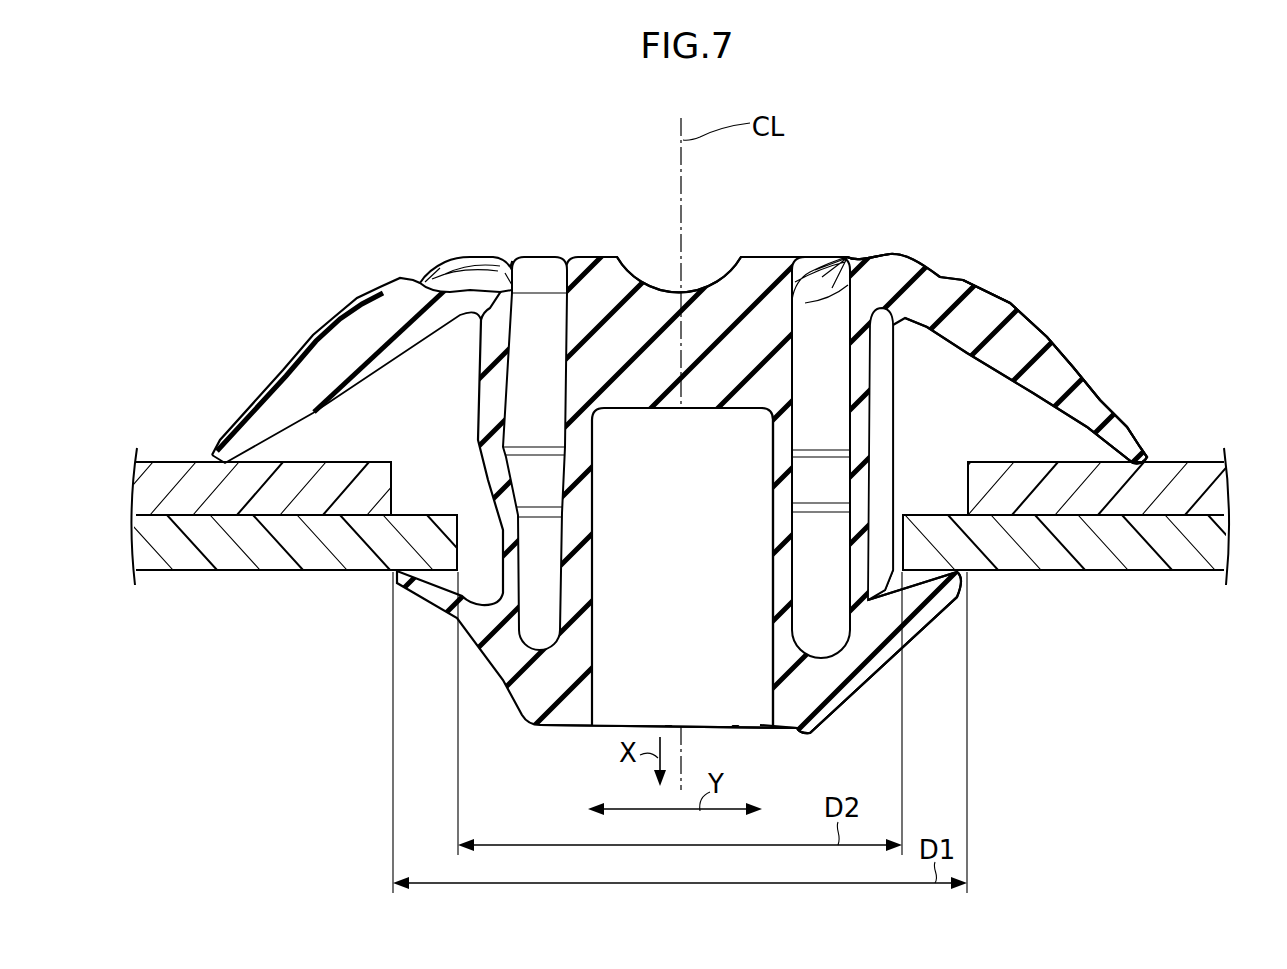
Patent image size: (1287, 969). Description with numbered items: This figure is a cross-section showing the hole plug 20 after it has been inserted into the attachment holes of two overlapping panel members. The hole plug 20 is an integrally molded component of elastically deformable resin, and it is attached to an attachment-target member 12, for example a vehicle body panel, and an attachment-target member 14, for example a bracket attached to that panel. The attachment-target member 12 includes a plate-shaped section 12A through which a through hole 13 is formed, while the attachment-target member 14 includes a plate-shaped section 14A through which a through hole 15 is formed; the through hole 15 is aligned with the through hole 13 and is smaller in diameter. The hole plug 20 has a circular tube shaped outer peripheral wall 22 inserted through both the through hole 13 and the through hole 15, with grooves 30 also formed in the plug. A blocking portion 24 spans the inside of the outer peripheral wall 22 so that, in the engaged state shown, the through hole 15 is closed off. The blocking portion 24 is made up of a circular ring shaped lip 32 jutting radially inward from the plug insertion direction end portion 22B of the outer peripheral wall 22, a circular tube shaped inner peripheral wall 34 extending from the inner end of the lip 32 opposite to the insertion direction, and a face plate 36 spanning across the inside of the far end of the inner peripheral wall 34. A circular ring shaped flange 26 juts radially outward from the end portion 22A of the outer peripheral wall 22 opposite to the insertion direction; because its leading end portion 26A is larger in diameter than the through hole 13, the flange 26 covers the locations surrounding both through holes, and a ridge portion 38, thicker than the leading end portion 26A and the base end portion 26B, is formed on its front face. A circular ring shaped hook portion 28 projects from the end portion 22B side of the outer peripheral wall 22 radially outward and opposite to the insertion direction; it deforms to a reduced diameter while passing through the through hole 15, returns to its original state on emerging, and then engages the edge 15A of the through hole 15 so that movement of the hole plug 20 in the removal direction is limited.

The attachment-target member 12 is at (1208, 454).
The plate-shaped section 12A is at (1007, 462).
The through hole 13 is at (968, 494).
The attachment-target member 14 is at (1177, 503).
The plate-shaped section 14A is at (1032, 510).
The through hole 15 is at (458, 525).
The edge 15A is at (437, 572).
The hole plug 20 is at (692, 454).
The outer peripheral wall 22 is at (889, 388).
The end portion 22A is at (854, 265).
The plug insertion direction end portion 22B is at (857, 692).
The blocking portion 24 is at (752, 248).
The flange 26 is at (950, 270).
The leading end portion 26A is at (1162, 458).
The base end portion 26B is at (892, 258).
The hook portion 28 is at (965, 580).
The grooves 30 is at (450, 256).
The lip 32 is at (800, 732).
The inner peripheral wall 34 is at (773, 522).
The face plate 36 is at (668, 410).
The ridge portion 38 is at (1025, 318).